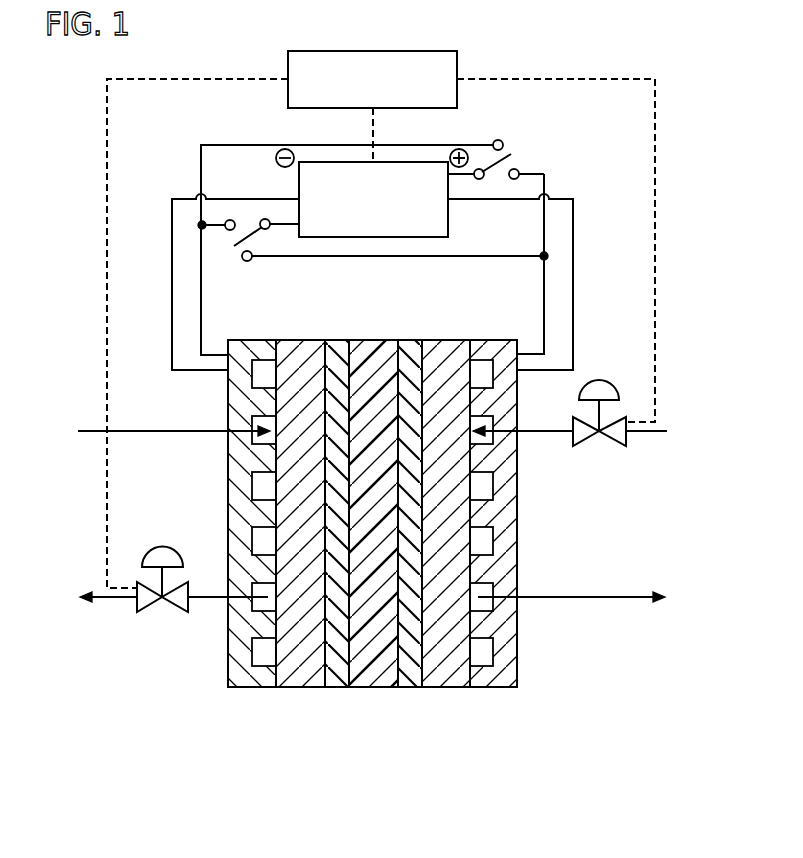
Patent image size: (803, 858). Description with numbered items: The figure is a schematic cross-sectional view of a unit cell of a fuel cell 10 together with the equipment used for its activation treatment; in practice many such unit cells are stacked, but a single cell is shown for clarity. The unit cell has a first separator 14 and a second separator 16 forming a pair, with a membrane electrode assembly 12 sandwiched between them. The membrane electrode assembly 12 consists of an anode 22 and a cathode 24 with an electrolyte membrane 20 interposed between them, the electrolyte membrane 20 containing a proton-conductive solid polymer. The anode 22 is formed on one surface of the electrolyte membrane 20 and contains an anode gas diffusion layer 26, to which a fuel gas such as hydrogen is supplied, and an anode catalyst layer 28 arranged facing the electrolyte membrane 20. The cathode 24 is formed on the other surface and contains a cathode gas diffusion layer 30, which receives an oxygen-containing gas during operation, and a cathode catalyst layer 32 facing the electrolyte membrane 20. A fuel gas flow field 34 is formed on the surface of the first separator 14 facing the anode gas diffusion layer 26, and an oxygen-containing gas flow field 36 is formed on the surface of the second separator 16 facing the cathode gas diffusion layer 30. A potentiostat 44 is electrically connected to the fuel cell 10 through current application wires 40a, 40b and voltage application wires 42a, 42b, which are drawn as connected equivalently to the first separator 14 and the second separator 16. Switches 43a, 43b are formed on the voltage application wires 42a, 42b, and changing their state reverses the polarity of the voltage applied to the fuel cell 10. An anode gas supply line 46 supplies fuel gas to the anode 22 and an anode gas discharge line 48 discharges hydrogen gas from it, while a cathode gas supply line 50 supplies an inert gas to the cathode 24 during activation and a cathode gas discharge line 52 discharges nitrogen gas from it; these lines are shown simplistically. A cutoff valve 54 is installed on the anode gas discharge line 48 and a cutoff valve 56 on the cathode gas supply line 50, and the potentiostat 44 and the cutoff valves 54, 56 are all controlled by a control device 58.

The fuel cell 10 is at (375, 516).
The membrane electrode assembly 12 is at (373, 530).
The first separator 14 is at (240, 552).
The second separator 16 is at (513, 549).
The electrolyte membrane 20 is at (367, 675).
The anode 22 is at (312, 511).
The cathode 24 is at (434, 510).
The anode gas diffusion layer 26 is at (299, 340).
The anode catalyst layer 28 is at (336, 340).
The cathode gas diffusion layer 30 is at (445, 340).
The cathode catalyst layer 32 is at (408, 340).
The fuel gas flow field 34 is at (256, 380).
The oxygen-containing gas flow field 36 is at (489, 380).
The current application wire 40a is at (172, 232).
The current application wire 40b is at (574, 241).
The voltage application wire 42a is at (200, 168).
The voltage application wire 42b is at (545, 188).
The switch 43a is at (236, 241).
The switch 43b is at (510, 161).
The potentiostat 44 is at (361, 238).
The anode gas supply line 46 is at (175, 429).
The anode gas discharge line 48 is at (201, 600).
The cathode gas supply line 50 is at (546, 429).
The cathode gas discharge line 52 is at (612, 595).
The cutoff valve 54 is at (153, 549).
The cutoff valve 56 is at (604, 383).
The control device 58 is at (430, 51).